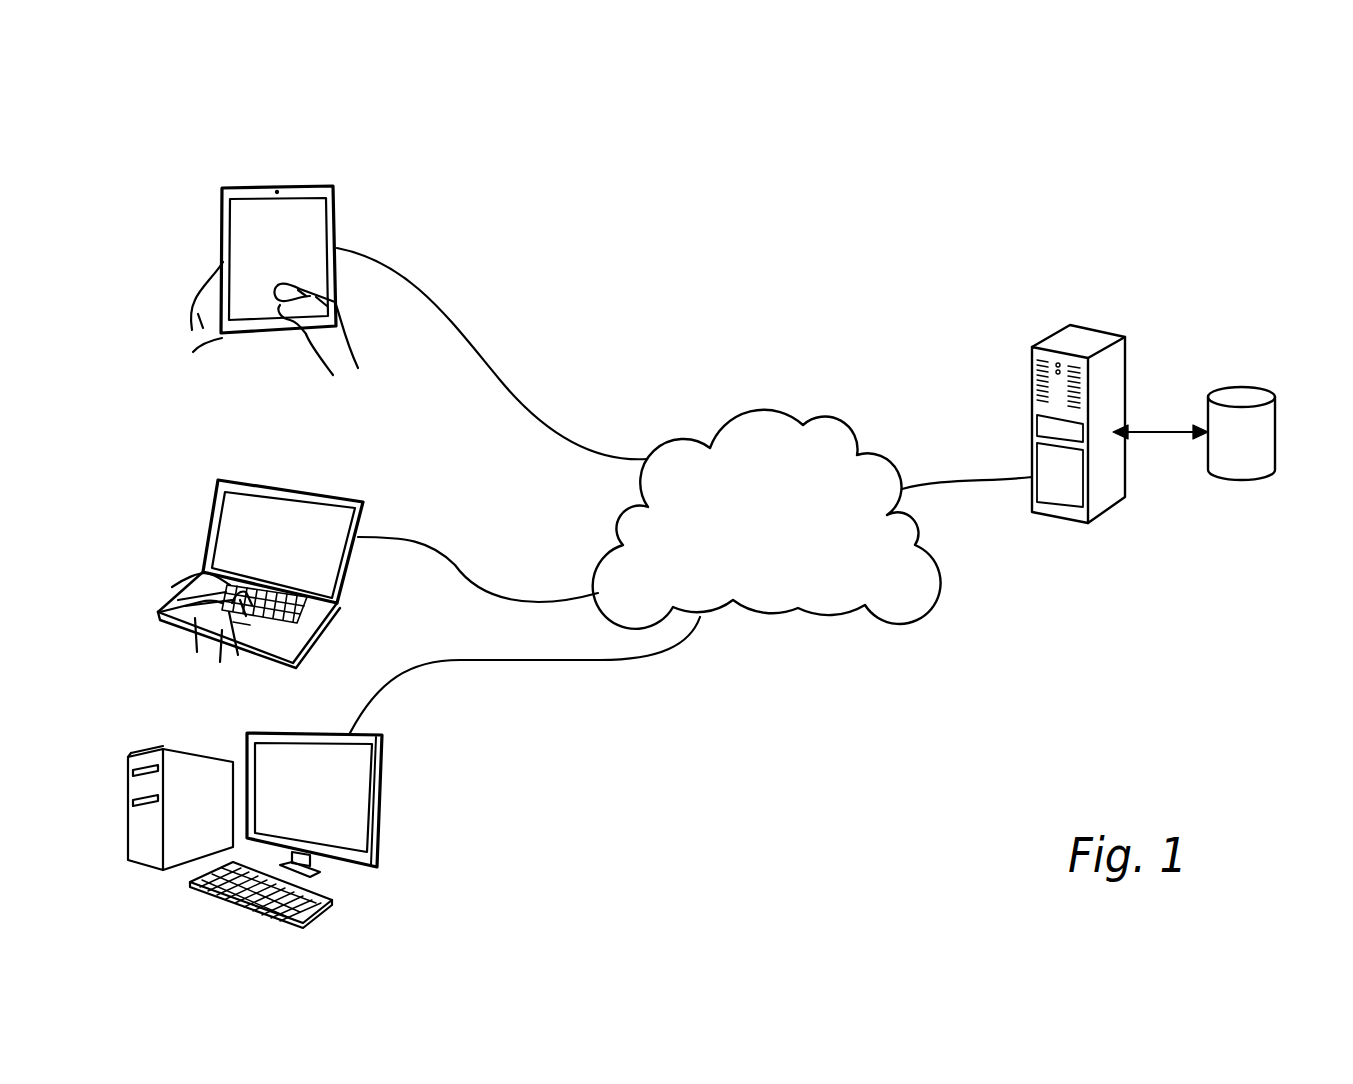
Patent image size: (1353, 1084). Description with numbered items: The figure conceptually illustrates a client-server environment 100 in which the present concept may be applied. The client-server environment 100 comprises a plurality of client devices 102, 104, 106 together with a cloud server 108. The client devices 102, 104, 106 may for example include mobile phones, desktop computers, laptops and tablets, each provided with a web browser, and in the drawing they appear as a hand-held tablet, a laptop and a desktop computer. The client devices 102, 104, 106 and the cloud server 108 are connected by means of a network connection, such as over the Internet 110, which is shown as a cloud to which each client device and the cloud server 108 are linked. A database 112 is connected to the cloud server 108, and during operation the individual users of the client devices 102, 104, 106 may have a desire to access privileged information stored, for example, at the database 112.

The client-server environment 100 is at (1074, 130).
The client device 102 is at (336, 224).
The client device 104 is at (367, 512).
The client device 106 is at (382, 788).
The cloud server 108 is at (1090, 342).
The Internet 110 is at (738, 537).
The database 112 is at (1247, 393).